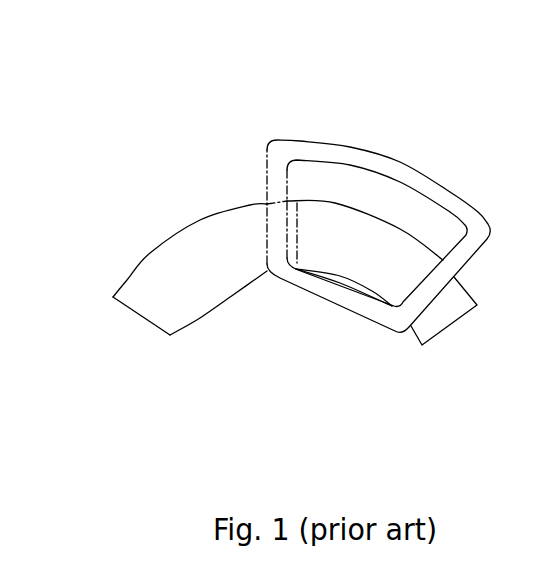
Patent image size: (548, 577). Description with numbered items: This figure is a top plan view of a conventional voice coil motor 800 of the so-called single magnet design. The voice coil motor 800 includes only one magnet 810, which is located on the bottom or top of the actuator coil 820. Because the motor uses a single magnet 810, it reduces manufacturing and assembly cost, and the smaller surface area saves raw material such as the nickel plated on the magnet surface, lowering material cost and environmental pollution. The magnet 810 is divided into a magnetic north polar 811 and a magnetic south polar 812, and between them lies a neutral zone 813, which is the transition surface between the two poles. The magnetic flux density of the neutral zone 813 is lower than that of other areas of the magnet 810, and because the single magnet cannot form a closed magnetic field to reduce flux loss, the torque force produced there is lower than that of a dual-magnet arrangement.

The voice coil motor 800 is at (58, 49).
The magnet 810 is at (295, 325).
The magnetic north polar 811 is at (423, 335).
The magnetic south polar 812 is at (212, 278).
The neutral zone 813 is at (298, 243).
The actuator coil 820 is at (455, 202).